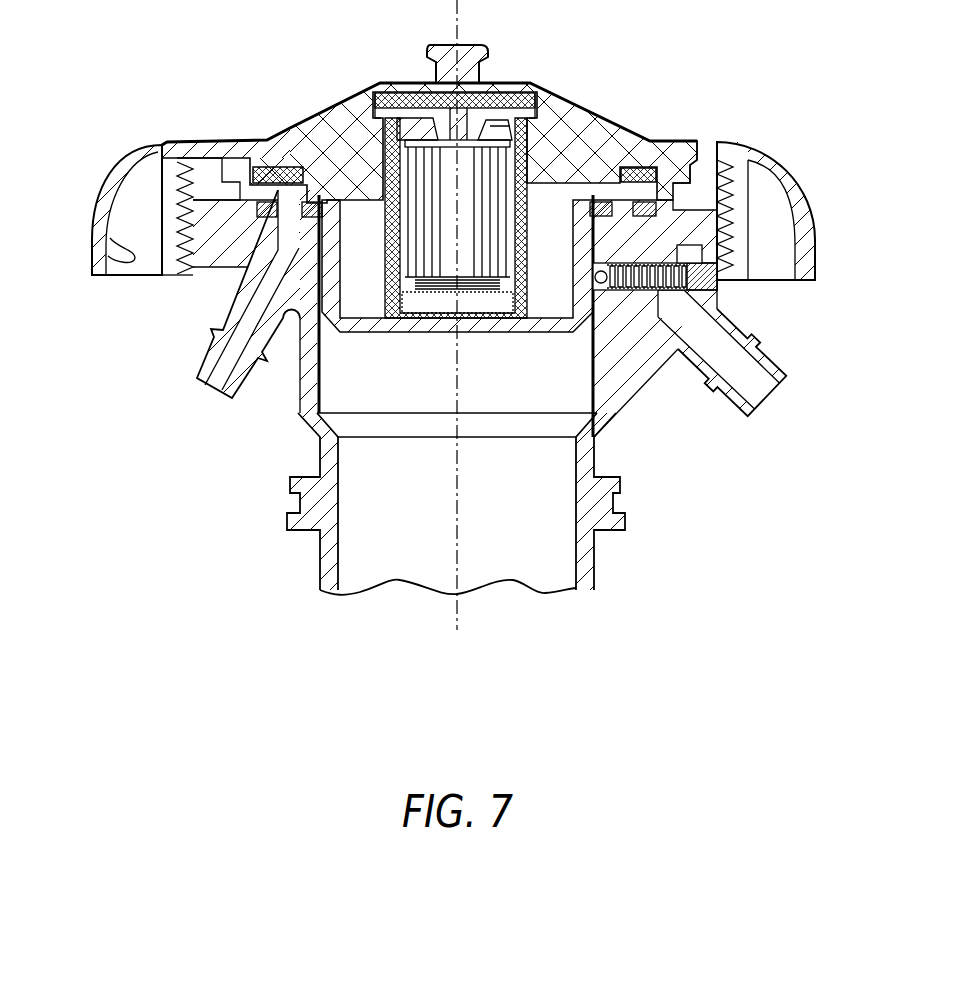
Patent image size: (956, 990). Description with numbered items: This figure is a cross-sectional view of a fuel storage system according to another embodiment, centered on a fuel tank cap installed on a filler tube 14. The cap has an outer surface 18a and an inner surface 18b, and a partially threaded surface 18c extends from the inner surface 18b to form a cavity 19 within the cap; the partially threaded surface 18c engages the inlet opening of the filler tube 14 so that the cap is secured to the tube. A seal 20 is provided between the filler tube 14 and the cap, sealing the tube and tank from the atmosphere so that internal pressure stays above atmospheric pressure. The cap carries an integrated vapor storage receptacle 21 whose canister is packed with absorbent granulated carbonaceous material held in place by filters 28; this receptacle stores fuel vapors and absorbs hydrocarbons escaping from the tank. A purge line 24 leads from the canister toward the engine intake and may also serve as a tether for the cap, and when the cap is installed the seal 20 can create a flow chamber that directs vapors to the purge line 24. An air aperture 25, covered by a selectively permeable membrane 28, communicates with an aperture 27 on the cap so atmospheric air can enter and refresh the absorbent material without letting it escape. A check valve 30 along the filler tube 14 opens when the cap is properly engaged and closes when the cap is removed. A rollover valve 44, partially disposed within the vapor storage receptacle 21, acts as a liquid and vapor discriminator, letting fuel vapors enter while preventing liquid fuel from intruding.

The filler tube 14 is at (320, 575).
The outer surface 18a is at (137, 150).
The inner surface 18b is at (110, 238).
The partially threaded surface 18c is at (181, 282).
The cavity 19 is at (206, 190).
The seal 20 is at (632, 235).
The vapor storage receptacle 21 is at (573, 167).
The purge line 24 is at (197, 372).
The air aperture 25 is at (621, 195).
The aperture 27 is at (703, 152).
The filter 28 is at (283, 165).
The check valve 30 is at (666, 299).
The rollover valve 44 is at (492, 342).